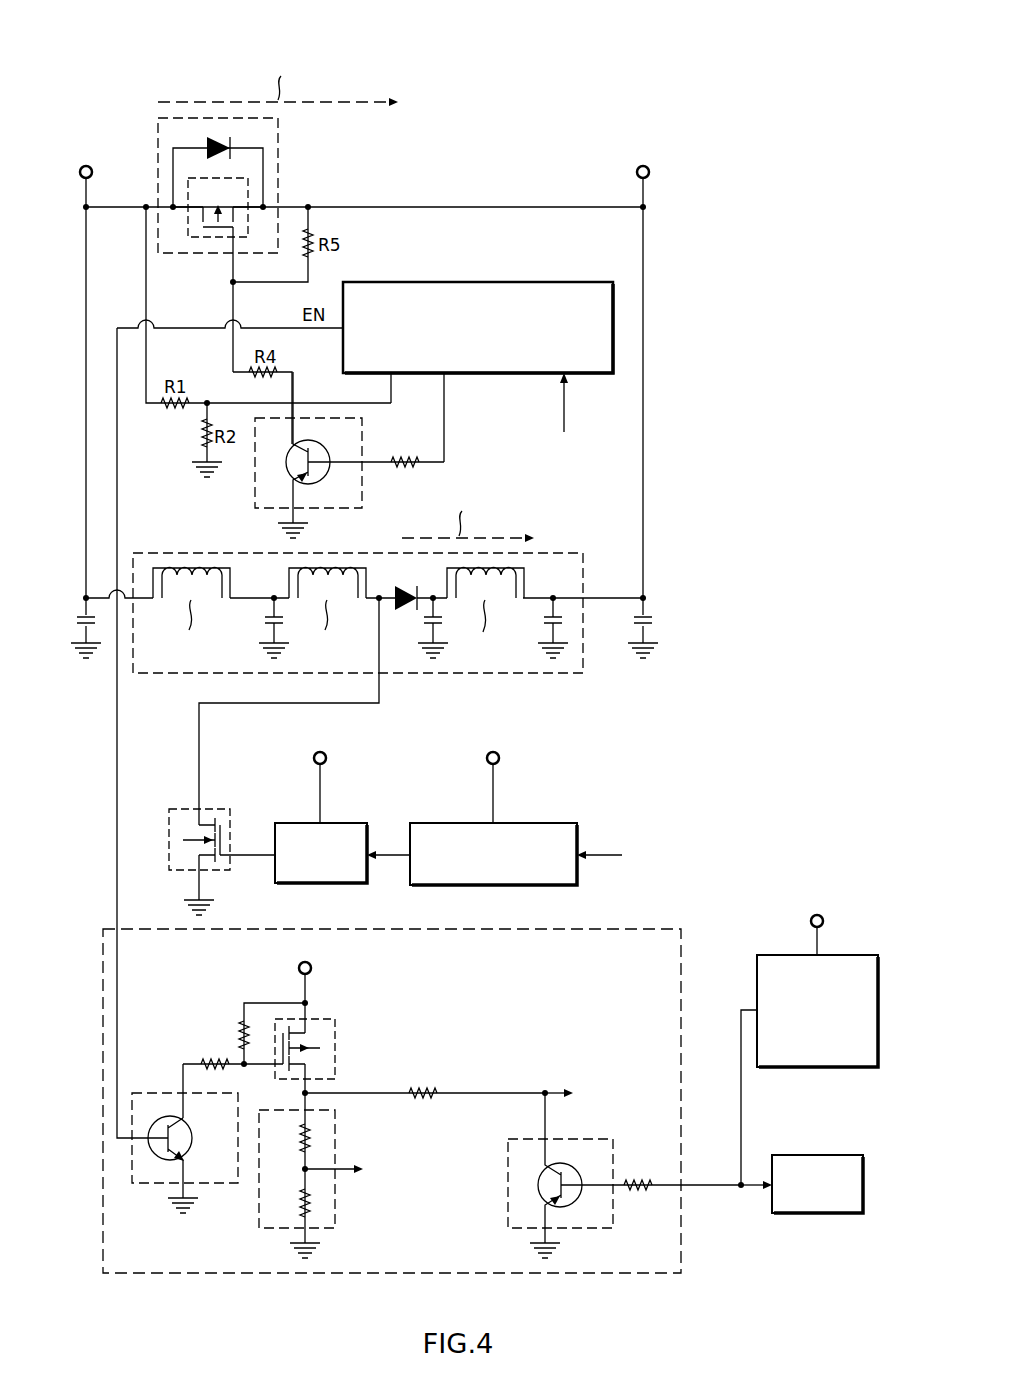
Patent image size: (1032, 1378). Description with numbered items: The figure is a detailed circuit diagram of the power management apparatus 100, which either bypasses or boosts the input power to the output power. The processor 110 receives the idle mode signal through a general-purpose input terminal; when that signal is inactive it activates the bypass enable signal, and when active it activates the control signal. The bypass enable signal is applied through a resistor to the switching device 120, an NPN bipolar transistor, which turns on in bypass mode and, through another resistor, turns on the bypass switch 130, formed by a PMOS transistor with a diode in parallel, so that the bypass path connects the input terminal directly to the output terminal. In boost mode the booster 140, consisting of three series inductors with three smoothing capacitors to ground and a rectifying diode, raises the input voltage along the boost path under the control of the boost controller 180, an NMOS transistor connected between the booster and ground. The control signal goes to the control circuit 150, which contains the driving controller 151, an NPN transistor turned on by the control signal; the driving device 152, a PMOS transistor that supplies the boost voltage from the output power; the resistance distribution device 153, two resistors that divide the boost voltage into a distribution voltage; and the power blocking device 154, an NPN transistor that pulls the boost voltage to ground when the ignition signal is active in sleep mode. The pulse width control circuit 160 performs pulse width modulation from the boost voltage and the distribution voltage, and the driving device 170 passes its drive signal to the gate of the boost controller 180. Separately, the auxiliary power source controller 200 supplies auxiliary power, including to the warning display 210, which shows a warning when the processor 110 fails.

The power management apparatus 100 is at (582, 60).
The processor 110 is at (477, 282).
The switching device 120 is at (362, 492).
The bypass switch 130 is at (279, 150).
The booster 140 is at (160, 553).
The control circuit 150 is at (666, 929).
The driving controller 151 is at (145, 1093).
The driving device 152 is at (336, 1049).
The resistance distribution device 153 is at (336, 1199).
The power blocking device 154 is at (506, 1214).
The pulse width control circuit 160 is at (559, 823).
The driving device 170 is at (348, 823).
The boost controller 180 is at (221, 809).
The auxiliary power source controller 200 is at (770, 1067).
The warning display 210 is at (815, 1155).